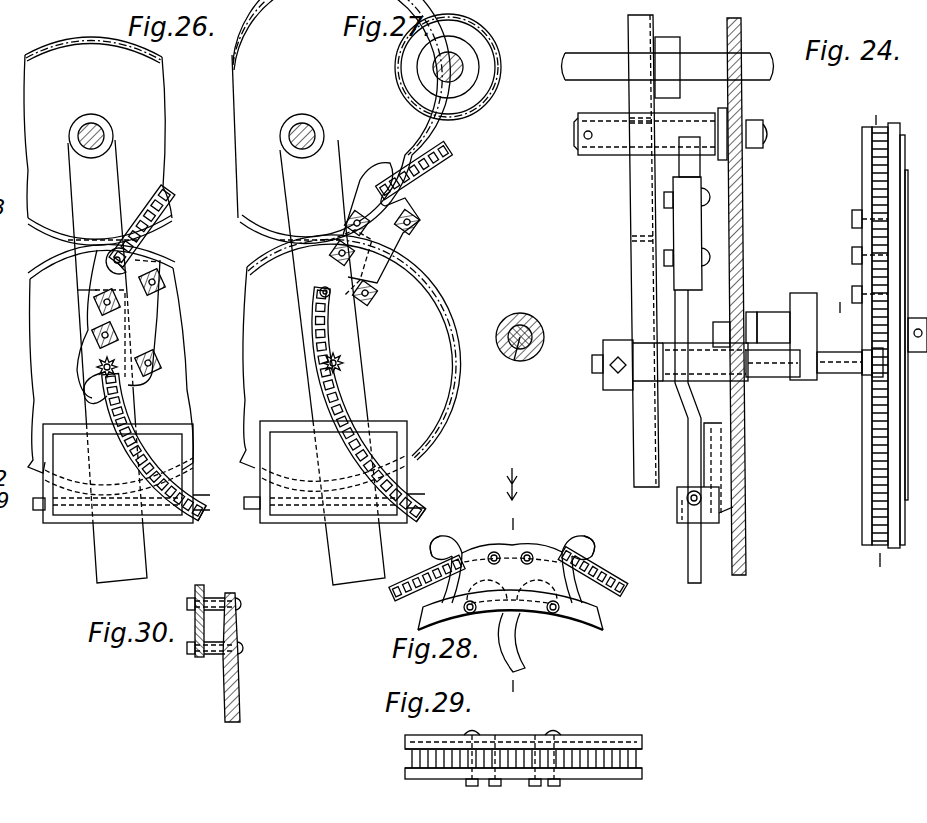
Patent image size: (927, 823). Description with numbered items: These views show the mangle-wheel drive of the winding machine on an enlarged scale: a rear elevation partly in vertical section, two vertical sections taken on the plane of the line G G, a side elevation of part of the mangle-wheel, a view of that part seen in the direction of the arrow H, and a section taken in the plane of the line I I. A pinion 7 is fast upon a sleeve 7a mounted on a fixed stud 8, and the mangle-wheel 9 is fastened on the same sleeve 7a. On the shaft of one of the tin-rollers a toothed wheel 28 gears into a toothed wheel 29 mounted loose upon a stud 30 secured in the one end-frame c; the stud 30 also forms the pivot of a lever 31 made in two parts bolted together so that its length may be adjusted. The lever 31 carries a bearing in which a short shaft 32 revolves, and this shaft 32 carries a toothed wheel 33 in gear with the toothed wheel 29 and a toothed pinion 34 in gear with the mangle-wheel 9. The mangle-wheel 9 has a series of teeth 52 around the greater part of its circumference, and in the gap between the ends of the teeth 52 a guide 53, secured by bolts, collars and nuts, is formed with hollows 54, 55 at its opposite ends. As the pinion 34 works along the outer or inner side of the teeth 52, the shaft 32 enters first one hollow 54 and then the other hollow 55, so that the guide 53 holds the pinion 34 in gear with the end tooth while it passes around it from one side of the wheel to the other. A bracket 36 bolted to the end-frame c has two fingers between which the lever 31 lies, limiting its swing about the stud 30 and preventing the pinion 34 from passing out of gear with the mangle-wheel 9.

In FIG. 24, the pinion 7 is at (806, 276).
In FIG. 27, the sleeve 7a is at (500, 330).
In FIG. 24, the sleeve 7a is at (838, 296).
In FIG. 27, the fixed stud 8 is at (514, 360).
In FIG. 24, the fixed stud 8 is at (920, 352).
In FIG. 26, the mangle-wheel 9 is at (205, 512).
In FIG. 27, the mangle-wheel 9 is at (412, 180).
In FIG. 28, the mangle-wheel 9 is at (612, 595).
In FIG. 29, the mangle-wheel 9 is at (630, 735).
In FIG. 30, the mangle-wheel 9 is at (240, 657).
In FIG. 24, the mangle-wheel 9 is at (862, 170).
In FIG. 27, the toothed wheel 28 is at (498, 88).
In FIG. 24, the toothed wheel 28 is at (626, 93).
In FIG. 26, the toothed wheel 29 is at (98, 141).
In FIG. 27, the toothed wheel 29 is at (341, 121).
In FIG. 24, the toothed wheel 29 is at (630, 200).
In FIG. 26, the stud 30 is at (101, 128).
In FIG. 27, the stud 30 is at (310, 128).
In FIG. 24, the stud 30 is at (574, 134).
In FIG. 26, the lever 31 is at (107, 361).
In FIG. 27, the lever 31 is at (332, 362).
In FIG. 24, the lever 31 is at (688, 310).
In FIG. 26, the short shaft 32 is at (102, 364).
In FIG. 27, the short shaft 32 is at (342, 366).
In FIG. 24, the short shaft 32 is at (592, 365).
In FIG. 26, the toothed wheel 33 is at (110, 358).
In FIG. 27, the toothed wheel 33 is at (350, 351).
In FIG. 24, the toothed wheel 33 is at (632, 297).
In FIG. 26, the toothed pinion 34 is at (100, 371).
In FIG. 27, the toothed pinion 34 is at (340, 360).
In FIG. 24, the toothed pinion 34 is at (875, 377).
In FIG. 26, the bracket 36 is at (80, 515).
In FIG. 27, the bracket 36 is at (300, 517).
In FIG. 24, the bracket 36 is at (677, 515).
In FIG. 26, the teeth 52 is at (160, 196).
In FIG. 27, the teeth 52 is at (450, 150).
In FIG. 28, the teeth 52 is at (392, 598).
In FIG. 29, the teeth 52 is at (404, 756).
In FIG. 24, the teeth 52 is at (876, 146).
In FIG. 26, the guide 53 is at (121, 324).
In FIG. 27, the guide 53 is at (374, 234).
In FIG. 28, the guide 53 is at (556, 542).
In FIG. 29, the guide 53 is at (523, 769).
In FIG. 30, the guide 53 is at (204, 590).
In FIG. 24, the guide 53 is at (852, 240).
In FIG. 26, the hollow 54 is at (90, 403).
In FIG. 28, the hollow 54 is at (432, 556).
In FIG. 26, the hollow 55 is at (128, 266).
In FIG. 28, the hollow 55 is at (592, 556).
In FIG. 24, the end-frame c is at (745, 552).
In FIG. 24, the section line G is at (888, 340).
In FIG. 28, the arrow H is at (522, 485).
In FIG. 28, the section line I is at (518, 606).